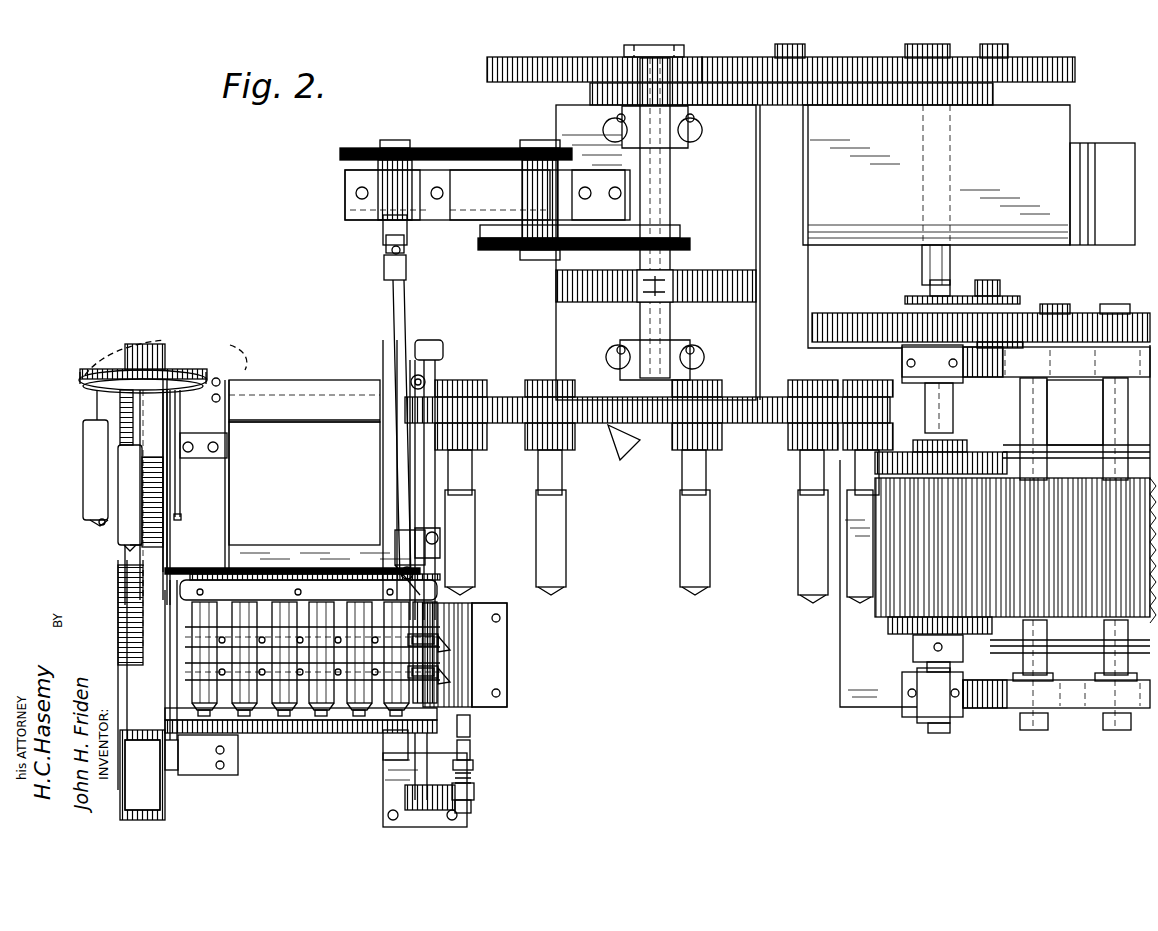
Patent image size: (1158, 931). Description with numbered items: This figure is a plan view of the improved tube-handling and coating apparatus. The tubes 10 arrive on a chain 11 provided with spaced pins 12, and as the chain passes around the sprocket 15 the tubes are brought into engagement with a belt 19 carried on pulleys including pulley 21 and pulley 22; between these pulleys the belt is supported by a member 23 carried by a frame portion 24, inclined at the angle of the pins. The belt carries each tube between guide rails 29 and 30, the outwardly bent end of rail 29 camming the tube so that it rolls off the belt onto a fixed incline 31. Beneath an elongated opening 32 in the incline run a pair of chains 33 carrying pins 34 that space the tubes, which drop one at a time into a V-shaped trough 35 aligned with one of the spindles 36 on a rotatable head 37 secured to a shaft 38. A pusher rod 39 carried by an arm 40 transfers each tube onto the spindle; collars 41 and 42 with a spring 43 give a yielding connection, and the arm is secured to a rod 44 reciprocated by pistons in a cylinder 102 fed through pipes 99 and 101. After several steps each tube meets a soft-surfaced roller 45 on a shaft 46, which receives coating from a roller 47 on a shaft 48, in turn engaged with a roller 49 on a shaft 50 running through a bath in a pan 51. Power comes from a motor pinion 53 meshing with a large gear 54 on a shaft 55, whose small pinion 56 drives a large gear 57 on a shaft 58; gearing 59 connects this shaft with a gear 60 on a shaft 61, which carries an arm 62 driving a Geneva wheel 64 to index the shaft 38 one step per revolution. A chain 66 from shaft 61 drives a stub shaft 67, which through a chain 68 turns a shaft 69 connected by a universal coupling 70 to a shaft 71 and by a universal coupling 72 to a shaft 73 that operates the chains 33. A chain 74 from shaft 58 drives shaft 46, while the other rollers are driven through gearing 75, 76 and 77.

The tubes 10 is at (92, 525).
The chain 11 is at (145, 340).
The pins 12 is at (98, 410).
The sprocket 15 is at (213, 378).
The belt 19 is at (152, 544).
The pulley 21 is at (115, 368).
The pulley 22 is at (165, 812).
The member 23 is at (165, 505).
The frame portion 24 is at (229, 442).
The guide rail 29 is at (120, 598).
The guide rail 30 is at (170, 562).
The fixed incline 31 is at (185, 640).
The elongated opening 32 is at (280, 715).
The chains 33 is at (300, 590).
The pins 34 is at (445, 672).
The V-shaped trough 35 is at (485, 675).
The spindles 36 is at (543, 474).
The rotatable head 37 is at (615, 420).
The shaft 38 is at (655, 178).
The pusher rod 39 is at (470, 726).
The arm 40 is at (474, 792).
The collar 41 is at (471, 808).
The collar 42 is at (473, 766).
The spring 43 is at (472, 778).
The rod 44 is at (398, 785).
The roller 45 is at (1015, 556).
The shaft 46 is at (953, 412).
The roller 47 is at (1030, 600).
The shaft 48 is at (1047, 403).
The roller 49 is at (1115, 595).
The shaft 50 is at (1103, 425).
The pan or trough 51 is at (1057, 452).
The pinion 53 is at (775, 50).
The large gear 54 is at (1075, 67).
The shaft 55 is at (905, 50).
The small pinion 56 is at (955, 75).
The large gear 57 is at (848, 313).
The shaft 58 is at (922, 260).
The gearing 59 is at (740, 100).
The gear 60 is at (590, 92).
The shaft 61 is at (670, 205).
The arm 62 is at (624, 50).
The Geneva wheel 64 is at (487, 68).
The chain 66 is at (610, 250).
The stub shaft 67 is at (540, 138).
The chain 68 is at (490, 148).
The shaft 69 is at (393, 140).
The universal coupling 70 is at (384, 255).
The shaft 71 is at (393, 333).
The universal coupling 72 is at (395, 540).
The shaft 73 is at (398, 568).
The chain 74 is at (965, 290).
The gearing 75 is at (895, 335).
The gearing 76 is at (1053, 305).
The gearing 77 is at (1130, 313).
The pipe 99 is at (426, 378).
The pipe 101 is at (440, 535).
The cylinder 102 is at (425, 472).